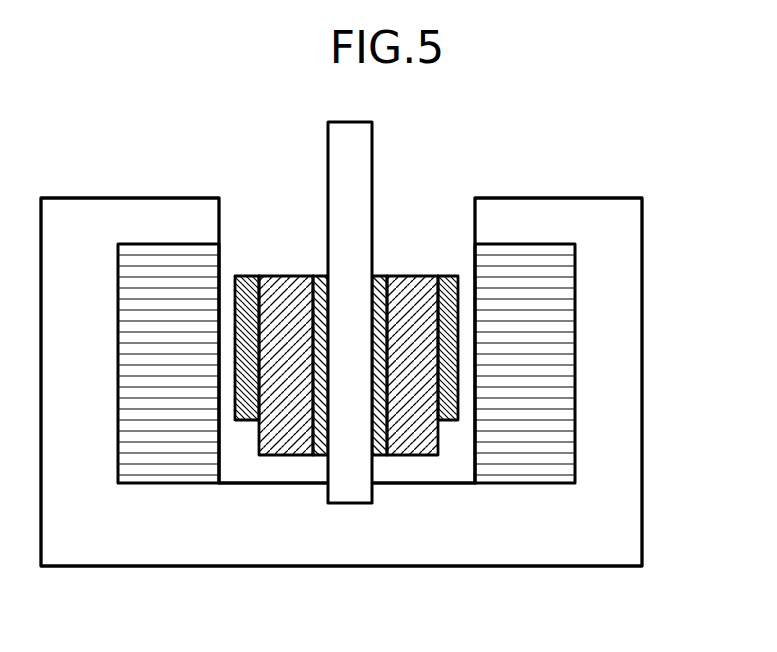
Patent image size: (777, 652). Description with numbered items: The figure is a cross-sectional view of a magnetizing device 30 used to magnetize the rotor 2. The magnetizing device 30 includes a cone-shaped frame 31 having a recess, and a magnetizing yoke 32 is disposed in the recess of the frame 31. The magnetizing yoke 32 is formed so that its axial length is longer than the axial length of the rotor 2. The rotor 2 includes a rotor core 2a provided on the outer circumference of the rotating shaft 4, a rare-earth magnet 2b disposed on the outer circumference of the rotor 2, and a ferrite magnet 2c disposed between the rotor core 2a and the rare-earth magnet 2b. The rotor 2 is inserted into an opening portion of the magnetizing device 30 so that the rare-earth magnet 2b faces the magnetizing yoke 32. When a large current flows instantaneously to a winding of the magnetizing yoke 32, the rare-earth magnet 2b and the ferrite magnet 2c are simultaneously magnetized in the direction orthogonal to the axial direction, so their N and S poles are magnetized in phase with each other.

The rotor 2 is at (344, 407).
The rotor core 2a is at (378, 443).
The rare-earth magnet 2b is at (240, 420).
The ferrite magnet 2c is at (300, 443).
The rotating shaft 4 is at (360, 150).
The magnetizing device 30 is at (374, 338).
The frame 31 is at (632, 305).
The magnetizing yoke 32 is at (557, 362).